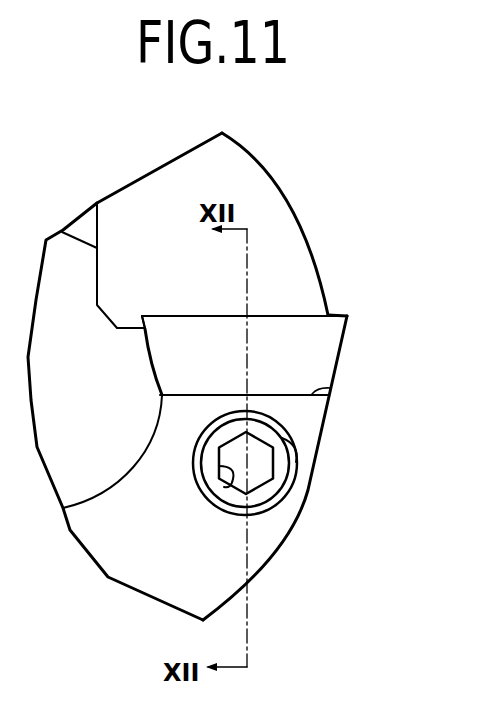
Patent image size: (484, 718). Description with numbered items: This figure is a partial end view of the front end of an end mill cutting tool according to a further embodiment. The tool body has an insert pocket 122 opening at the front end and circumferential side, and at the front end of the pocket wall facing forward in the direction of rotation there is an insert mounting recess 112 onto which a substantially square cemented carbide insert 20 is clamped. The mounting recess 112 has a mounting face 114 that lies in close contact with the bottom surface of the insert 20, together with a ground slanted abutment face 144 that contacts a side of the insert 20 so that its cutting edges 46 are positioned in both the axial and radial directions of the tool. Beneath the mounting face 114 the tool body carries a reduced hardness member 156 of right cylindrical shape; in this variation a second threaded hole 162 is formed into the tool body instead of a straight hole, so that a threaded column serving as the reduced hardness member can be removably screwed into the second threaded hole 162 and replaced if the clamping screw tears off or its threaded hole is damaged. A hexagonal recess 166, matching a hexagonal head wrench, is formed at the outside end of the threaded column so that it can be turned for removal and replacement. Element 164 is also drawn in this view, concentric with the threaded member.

The insert 20 is at (212, 340).
The cutting edges 46 is at (348, 315).
The insert mounting recess 112 is at (287, 373).
The mounting face 114 is at (330, 388).
The insert pocket 122 is at (247, 194).
The abutment face 144 is at (150, 345).
The reduced hardness member of right cylindrical shape 156 is at (260, 493).
The second threaded hole 162 is at (283, 452).
The counterbore 164 is at (287, 493).
The hexagonal recess 166 is at (233, 478).